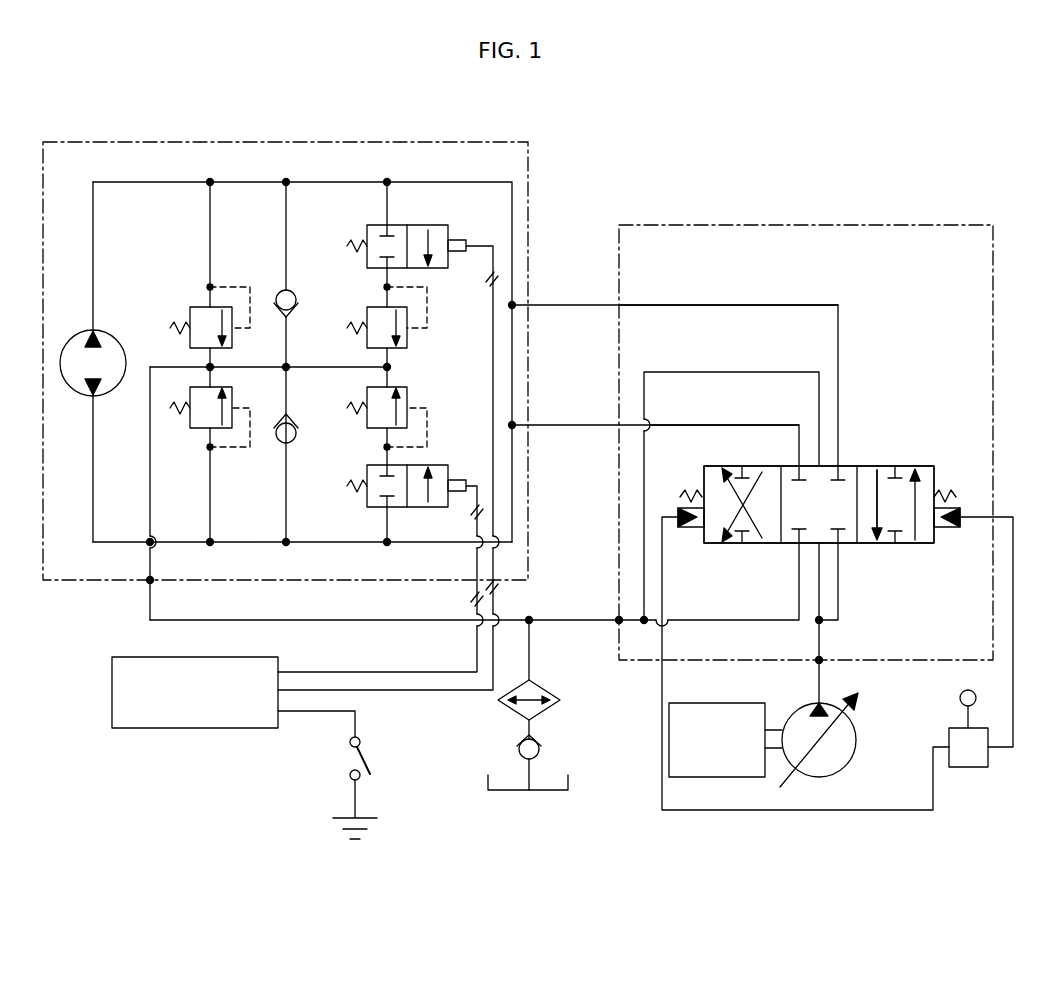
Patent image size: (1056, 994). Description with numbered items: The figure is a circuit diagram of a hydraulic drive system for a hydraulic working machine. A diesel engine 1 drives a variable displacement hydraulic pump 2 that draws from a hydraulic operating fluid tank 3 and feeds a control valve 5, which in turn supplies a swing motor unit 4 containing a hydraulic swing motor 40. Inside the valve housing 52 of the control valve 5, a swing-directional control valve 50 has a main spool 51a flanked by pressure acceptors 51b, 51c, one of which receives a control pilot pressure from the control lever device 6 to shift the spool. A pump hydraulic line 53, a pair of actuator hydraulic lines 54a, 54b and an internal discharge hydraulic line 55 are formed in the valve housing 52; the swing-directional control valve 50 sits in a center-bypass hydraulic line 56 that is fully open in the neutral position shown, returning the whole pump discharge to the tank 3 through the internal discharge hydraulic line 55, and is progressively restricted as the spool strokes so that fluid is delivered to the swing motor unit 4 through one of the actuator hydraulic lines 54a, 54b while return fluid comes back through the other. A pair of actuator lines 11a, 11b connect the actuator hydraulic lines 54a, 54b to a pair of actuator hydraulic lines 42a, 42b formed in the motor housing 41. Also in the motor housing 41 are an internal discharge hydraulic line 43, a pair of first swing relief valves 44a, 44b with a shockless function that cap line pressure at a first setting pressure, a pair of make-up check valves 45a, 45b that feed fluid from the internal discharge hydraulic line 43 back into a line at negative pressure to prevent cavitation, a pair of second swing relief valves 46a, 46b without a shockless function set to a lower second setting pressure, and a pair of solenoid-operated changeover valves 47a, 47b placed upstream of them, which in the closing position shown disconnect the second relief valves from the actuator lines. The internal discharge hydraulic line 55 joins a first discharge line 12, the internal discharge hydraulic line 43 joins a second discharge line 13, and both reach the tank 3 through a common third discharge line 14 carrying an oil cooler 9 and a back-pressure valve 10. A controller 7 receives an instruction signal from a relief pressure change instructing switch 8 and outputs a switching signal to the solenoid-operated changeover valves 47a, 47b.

The diesel engine 1 is at (724, 702).
The variable displacement hydraulic pump 2 is at (856, 742).
The hydraulic operating fluid tank 3 is at (569, 782).
The swing motor unit 4 is at (498, 140).
The control valve 5 is at (880, 222).
The control lever device 6 is at (988, 760).
The controller 7 is at (234, 728).
The relief pressure change instructing switch 8 is at (368, 752).
The oil cooler 9 is at (548, 690).
The back-pressure valve 10 is at (541, 744).
The actuator line 11a is at (572, 304).
The actuator line 11b is at (572, 424).
The first discharge line 12 is at (573, 620).
The second discharge line 13 is at (312, 622).
The third discharge line 14 is at (530, 660).
The hydraulic swing motor 40 is at (104, 344).
The motor housing 41 is at (350, 176).
The actuator hydraulic line 42a is at (132, 182).
The actuator hydraulic line 42b is at (340, 544).
The internal discharge hydraulic line 43 is at (150, 487).
The first swing relief valve 44a is at (185, 306).
The first swing relief valve 44b is at (200, 430).
The check valve 45a is at (288, 308).
The check valve 45b is at (290, 432).
The second swing relief valve 46a is at (407, 340).
The second swing relief valve 46b is at (407, 396).
The solenoid-operated changeover valve 47a is at (430, 232).
The solenoid-operated changeover valve 47b is at (430, 466).
The swing-directional control valve 50 is at (904, 462).
The main spool 51a is at (868, 466).
The pressure acceptor 51b is at (946, 530).
The pressure acceptor 51c is at (692, 530).
The valve housing 52 is at (848, 260).
The pump hydraulic line 53 is at (821, 632).
The actuator hydraulic line 54a is at (714, 304).
The actuator hydraulic line 54b is at (706, 424).
The internal discharge hydraulic line 55 is at (742, 622).
The center-bypass hydraulic line 56 is at (799, 578).